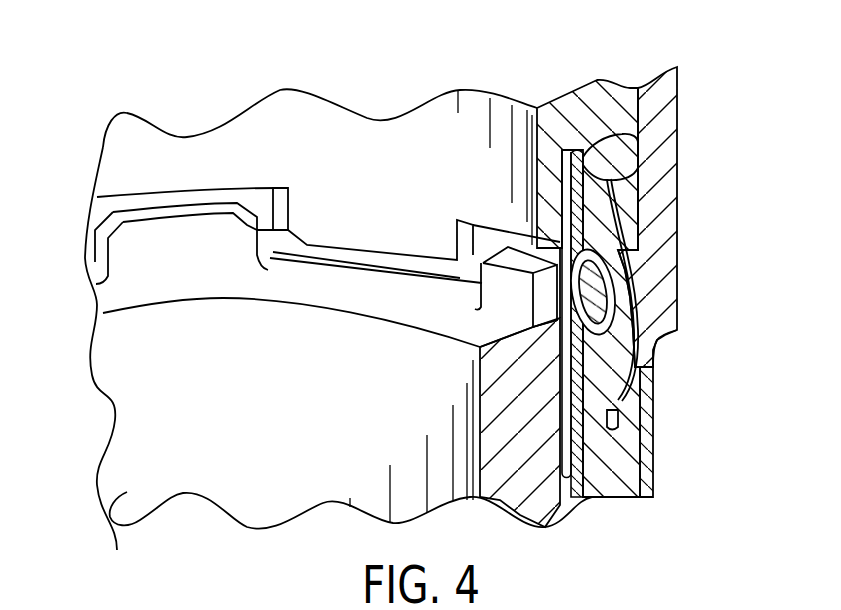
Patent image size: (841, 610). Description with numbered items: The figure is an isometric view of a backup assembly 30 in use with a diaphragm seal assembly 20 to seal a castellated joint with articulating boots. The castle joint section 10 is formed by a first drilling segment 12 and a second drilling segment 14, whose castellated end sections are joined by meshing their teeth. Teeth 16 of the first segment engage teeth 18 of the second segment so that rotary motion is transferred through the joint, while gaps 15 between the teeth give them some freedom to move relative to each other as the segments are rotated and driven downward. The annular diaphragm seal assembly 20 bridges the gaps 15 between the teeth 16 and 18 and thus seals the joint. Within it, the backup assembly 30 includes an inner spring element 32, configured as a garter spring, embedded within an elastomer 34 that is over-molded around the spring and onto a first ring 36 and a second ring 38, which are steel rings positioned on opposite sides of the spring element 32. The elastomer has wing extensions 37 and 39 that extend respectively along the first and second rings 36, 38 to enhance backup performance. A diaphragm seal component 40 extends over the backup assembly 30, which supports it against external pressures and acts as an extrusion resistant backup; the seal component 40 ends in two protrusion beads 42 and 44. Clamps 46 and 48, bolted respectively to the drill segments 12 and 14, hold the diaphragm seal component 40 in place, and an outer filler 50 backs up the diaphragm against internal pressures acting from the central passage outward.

The castle joint section 10 is at (632, 68).
The drilling segment 12 is at (113, 140).
The drilling segment 14 is at (378, 533).
The gaps 15 is at (272, 240).
The teeth 16 is at (352, 230).
The teeth 18 is at (137, 253).
The diaphragm seal assembly 20 is at (688, 312).
The backup assembly 30 is at (560, 343).
The spring element 32 is at (640, 413).
The elastomer 34 is at (645, 253).
The first ring 36 is at (641, 134).
The wing extension 37 is at (632, 237).
The second ring 38 is at (578, 477).
The wing extension 39 is at (622, 443).
The diaphragm seal component 40 is at (618, 335).
The protrusion bead 42 is at (655, 493).
The protrusion bead 44 is at (580, 185).
The clamp 46 is at (661, 99).
The clamp 48 is at (648, 420).
The outer filler 50 is at (677, 345).